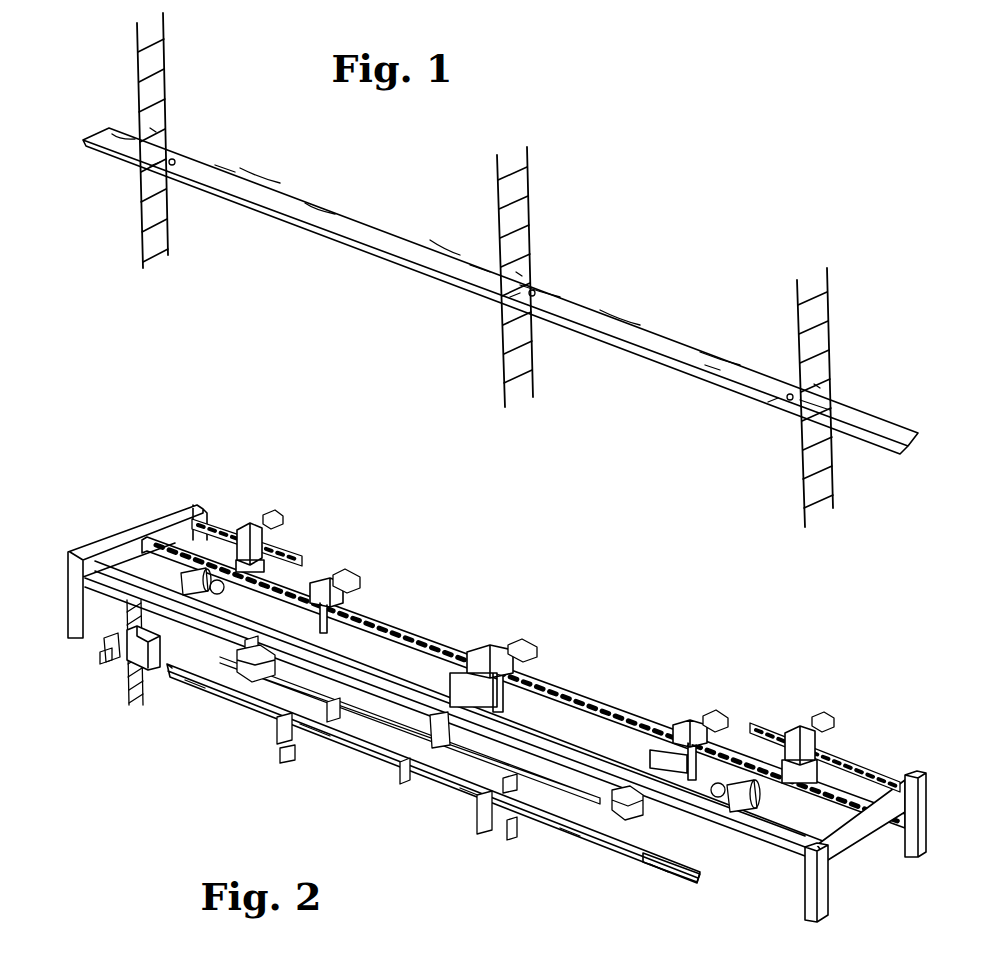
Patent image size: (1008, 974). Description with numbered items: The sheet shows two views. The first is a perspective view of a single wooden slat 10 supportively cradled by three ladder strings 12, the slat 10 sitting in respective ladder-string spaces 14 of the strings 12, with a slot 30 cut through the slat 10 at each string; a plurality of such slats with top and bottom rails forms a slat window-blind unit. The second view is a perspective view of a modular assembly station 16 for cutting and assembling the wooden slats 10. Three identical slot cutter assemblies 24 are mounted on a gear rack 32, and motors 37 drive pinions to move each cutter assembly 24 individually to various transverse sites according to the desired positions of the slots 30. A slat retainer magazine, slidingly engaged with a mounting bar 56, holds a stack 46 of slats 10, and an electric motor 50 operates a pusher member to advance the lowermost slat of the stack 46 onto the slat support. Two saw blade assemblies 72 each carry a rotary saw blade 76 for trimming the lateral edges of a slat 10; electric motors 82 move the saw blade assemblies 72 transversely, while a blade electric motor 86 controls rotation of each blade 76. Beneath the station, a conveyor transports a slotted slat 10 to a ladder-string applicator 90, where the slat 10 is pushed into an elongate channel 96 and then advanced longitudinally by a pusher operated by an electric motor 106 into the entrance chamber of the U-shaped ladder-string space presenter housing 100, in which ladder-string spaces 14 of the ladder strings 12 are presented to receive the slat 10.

In FIG. 1, the wooden slat 10 is at (358, 230).
In FIG. 2, the wooden slat 10 is at (447, 790).
In FIG. 1, the ladder string 12 is at (165, 52).
In FIG. 2, the ladder string 12 is at (125, 702).
In FIG. 1, the ladder-string space 14 is at (160, 133).
In FIG. 1, the slot 30 is at (176, 166).
In FIG. 2, the modular assembly station 16 is at (556, 620).
In FIG. 2, the slot cutter assembly 24 is at (330, 588).
In FIG. 2, the gear rack 32 is at (395, 632).
In FIG. 2, the motor 37 is at (357, 578).
In FIG. 2, the stack of slats 46 is at (560, 742).
In FIG. 2, the electric motor 50 is at (245, 700).
In FIG. 2, the mounting bar 56 is at (783, 845).
In FIG. 2, the saw blade assembly 72 is at (245, 524).
In FIG. 2, the rotary saw blade 76 is at (222, 596).
In FIG. 2, the electric motor 82 is at (282, 518).
In FIG. 2, the blade electric motor 86 is at (145, 626).
In FIG. 2, the ladder-string applicator 90 is at (108, 652).
In FIG. 2, the elongate channel 96 is at (380, 762).
In FIG. 2, the ladder-string space presenter housing 100 is at (140, 628).
In FIG. 2, the electric motor 106 is at (672, 874).